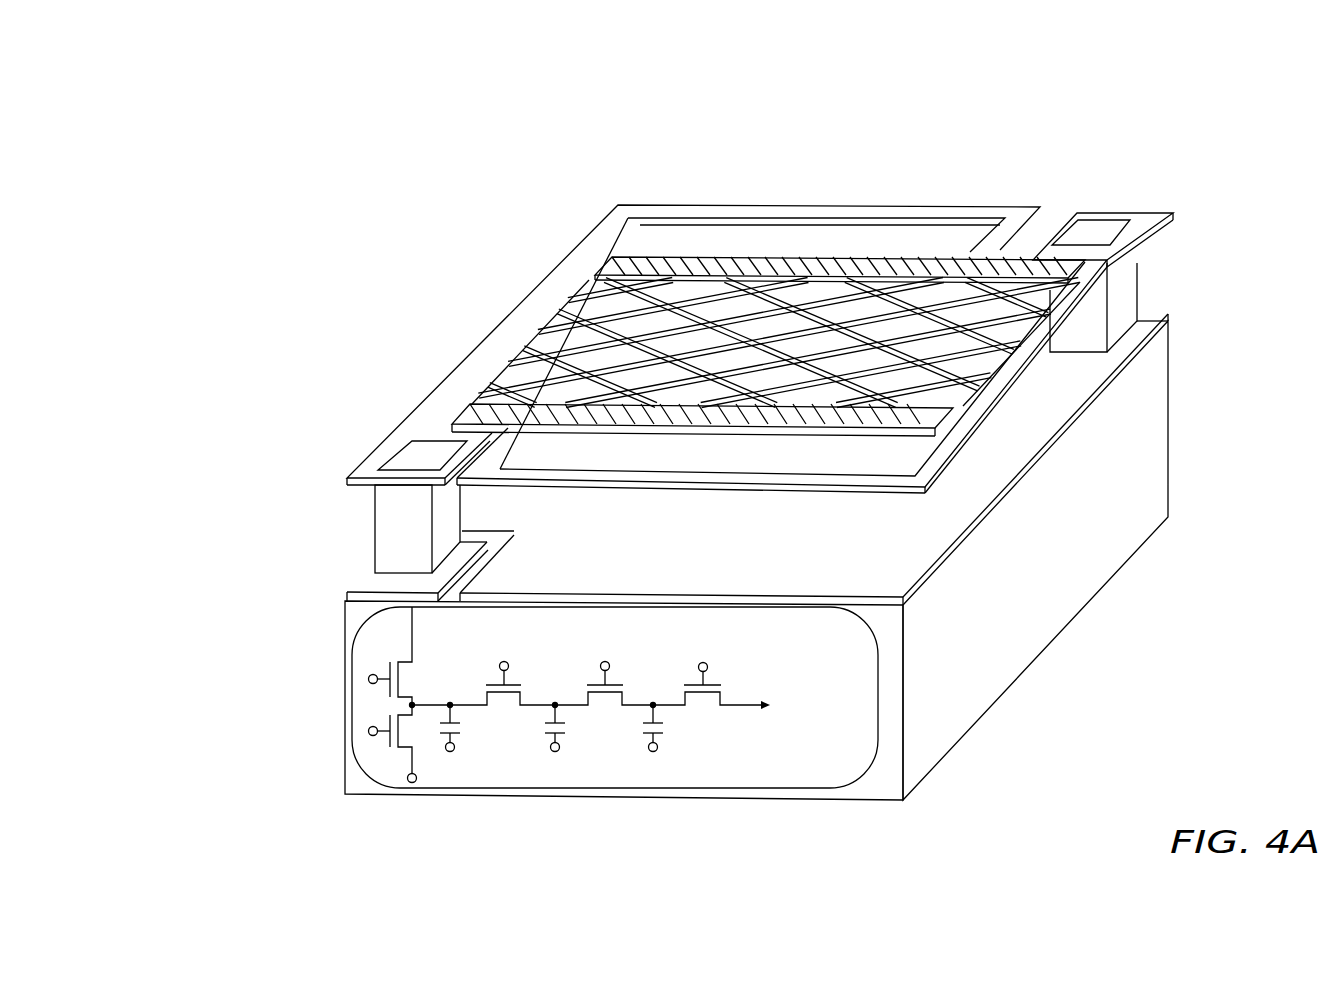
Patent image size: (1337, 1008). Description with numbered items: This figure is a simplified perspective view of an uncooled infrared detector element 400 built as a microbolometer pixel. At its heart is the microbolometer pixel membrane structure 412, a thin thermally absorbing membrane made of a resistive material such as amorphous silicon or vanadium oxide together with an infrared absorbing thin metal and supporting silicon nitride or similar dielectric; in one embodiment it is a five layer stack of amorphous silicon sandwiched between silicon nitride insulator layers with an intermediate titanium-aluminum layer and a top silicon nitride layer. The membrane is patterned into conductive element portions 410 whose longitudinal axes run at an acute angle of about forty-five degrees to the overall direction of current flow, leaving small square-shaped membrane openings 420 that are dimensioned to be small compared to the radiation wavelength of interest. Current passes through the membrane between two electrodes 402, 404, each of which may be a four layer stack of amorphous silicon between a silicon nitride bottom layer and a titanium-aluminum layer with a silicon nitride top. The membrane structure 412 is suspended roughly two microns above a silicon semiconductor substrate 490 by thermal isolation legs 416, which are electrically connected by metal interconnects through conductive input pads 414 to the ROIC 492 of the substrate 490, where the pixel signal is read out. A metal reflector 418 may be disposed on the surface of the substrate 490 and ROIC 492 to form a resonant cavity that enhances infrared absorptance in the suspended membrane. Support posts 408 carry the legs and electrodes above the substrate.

The uncooled infrared detector element 400 is at (1090, 106).
The electrode 402 is at (890, 268).
The electrode 404 is at (778, 413).
The support post 408 is at (375, 530).
The conductive element portions 410 is at (862, 292).
The microbolometer pixel membrane structure 412 is at (602, 365).
The input pads 414 is at (367, 583).
The thermal isolation legs 416 is at (462, 377).
The metal reflector 418 is at (963, 503).
The membrane openings 420 is at (617, 323).
The silicon semiconductor substrate 490 is at (982, 660).
The ROIC 492 is at (828, 780).